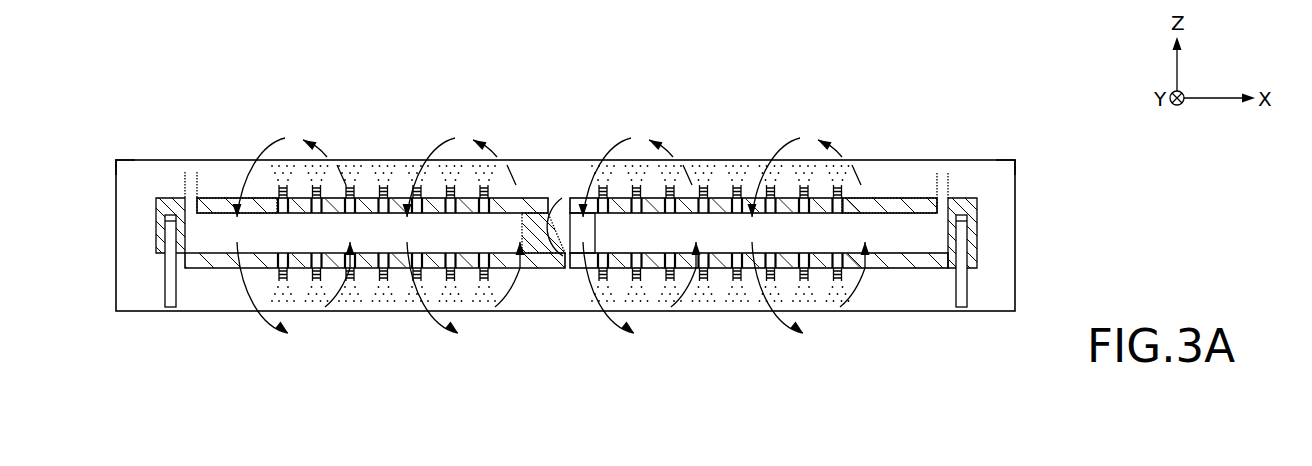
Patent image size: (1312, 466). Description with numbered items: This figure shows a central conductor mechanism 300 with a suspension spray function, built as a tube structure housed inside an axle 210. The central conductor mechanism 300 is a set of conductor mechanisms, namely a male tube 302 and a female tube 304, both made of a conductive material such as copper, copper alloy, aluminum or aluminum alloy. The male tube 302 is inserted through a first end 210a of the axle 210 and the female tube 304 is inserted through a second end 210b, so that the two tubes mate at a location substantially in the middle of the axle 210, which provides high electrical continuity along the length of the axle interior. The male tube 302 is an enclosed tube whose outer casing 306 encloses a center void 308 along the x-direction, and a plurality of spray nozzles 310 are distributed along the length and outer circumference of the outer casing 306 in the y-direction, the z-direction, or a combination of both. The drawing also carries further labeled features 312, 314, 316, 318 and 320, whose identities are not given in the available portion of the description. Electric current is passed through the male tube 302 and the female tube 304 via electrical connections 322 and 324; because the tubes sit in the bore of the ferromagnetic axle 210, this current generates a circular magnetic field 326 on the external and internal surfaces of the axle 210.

The axle 210 is at (237, 153).
The first end of axle 210a is at (1015, 160).
The second end of axle 210b is at (116, 160).
The central conductor mechanism 300 is at (552, 172).
The male tube 302 is at (977, 212).
The female tube 304 is at (156, 212).
The outer casing 306 is at (908, 268).
The center void 308 is at (733, 228).
The spray nozzles 310 is at (601, 283).
The right support wall 312 is at (942, 156).
The lower left board portion 314 is at (217, 255).
The upper left board portion 316 is at (393, 232).
The left heat-generating components 318 is at (283, 282).
The left support wall 320 is at (190, 155).
The electrical connection 322 is at (962, 324).
The electrical connection 324 is at (171, 336).
The circular magnetic field 326 is at (336, 293).